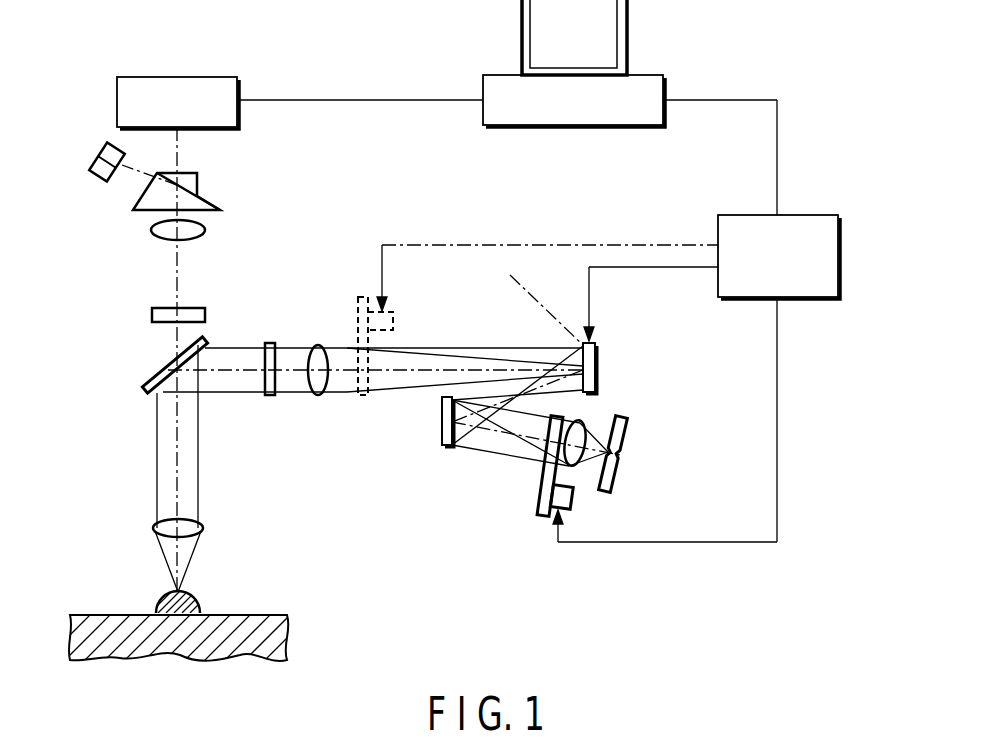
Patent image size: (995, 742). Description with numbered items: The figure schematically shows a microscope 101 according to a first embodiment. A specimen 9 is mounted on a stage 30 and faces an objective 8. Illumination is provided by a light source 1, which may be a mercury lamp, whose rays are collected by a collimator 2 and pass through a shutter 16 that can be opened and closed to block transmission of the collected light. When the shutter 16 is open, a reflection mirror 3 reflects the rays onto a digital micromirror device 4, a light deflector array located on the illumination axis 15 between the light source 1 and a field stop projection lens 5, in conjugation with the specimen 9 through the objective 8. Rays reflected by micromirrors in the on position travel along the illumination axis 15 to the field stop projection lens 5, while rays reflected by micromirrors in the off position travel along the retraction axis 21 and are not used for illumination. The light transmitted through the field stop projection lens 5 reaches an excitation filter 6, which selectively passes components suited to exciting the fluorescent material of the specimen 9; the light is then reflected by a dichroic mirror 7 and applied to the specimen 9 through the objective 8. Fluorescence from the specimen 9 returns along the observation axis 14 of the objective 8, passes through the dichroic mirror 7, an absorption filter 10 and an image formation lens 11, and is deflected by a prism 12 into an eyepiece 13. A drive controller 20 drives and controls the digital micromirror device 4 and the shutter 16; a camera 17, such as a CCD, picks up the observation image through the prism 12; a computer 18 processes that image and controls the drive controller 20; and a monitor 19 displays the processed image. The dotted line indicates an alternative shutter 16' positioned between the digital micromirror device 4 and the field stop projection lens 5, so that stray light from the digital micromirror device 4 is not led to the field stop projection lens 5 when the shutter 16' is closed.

The light source 1 is at (617, 470).
The collimator 2 is at (590, 433).
The reflection mirror 3 is at (440, 436).
The digital micromirror device 4 is at (597, 358).
The field stop projection lens 5 is at (318, 344).
The excitation filter 6 is at (272, 343).
The dichroic mirror 7 is at (158, 376).
The objective 8 is at (153, 528).
The specimen 9 is at (160, 606).
The absorption filter 10 is at (151, 314).
The image formation lens 11 is at (151, 229).
The prism 12 is at (206, 196).
The eyepiece 13 is at (95, 176).
The observation axis 14 is at (157, 438).
The illumination axis 15 is at (456, 344).
The shutter 16 is at (524, 473).
The shutter 16' is at (362, 314).
The camera 17 is at (151, 77).
The computer 18 is at (500, 75).
The monitor 19 is at (627, 24).
The drive controller 20 is at (819, 226).
The retraction axis 21 is at (542, 308).
The stage 30 is at (250, 648).
The microscope 101 is at (802, 63).